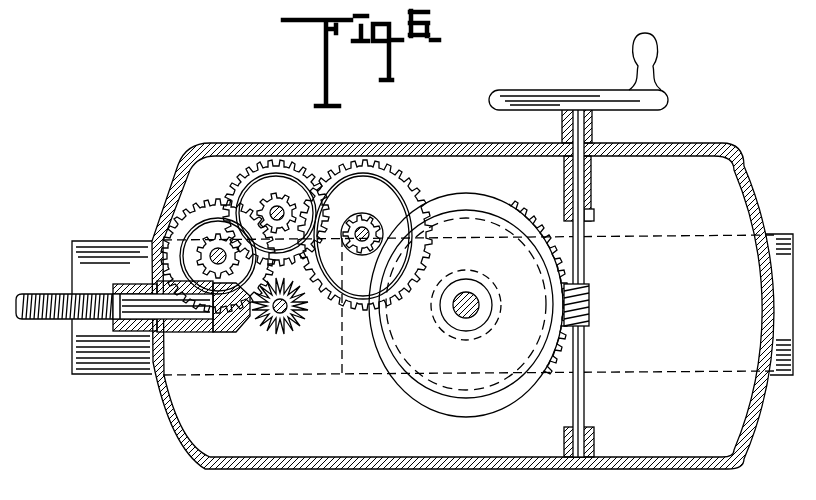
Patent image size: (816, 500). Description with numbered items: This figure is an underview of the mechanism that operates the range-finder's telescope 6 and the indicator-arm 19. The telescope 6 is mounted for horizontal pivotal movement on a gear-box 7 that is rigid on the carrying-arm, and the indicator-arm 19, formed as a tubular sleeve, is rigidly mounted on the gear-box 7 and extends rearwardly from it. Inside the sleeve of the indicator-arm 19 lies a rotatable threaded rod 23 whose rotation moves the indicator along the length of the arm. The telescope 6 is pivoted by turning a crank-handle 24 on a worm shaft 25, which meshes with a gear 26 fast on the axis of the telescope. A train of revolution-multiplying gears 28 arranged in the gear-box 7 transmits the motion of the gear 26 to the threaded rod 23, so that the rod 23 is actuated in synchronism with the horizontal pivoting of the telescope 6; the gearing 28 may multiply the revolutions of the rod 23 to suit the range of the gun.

The range-finder's telescope 6 is at (100, 357).
The gear-box 7 is at (714, 143).
The indicator-arm 19 is at (58, 279).
The threaded rod 23 is at (38, 322).
The crank-handle 24 is at (612, 87).
The worm shaft 25 is at (587, 299).
The gear 26 is at (499, 209).
The train of revolution-multiplying gears 28 is at (192, 212).